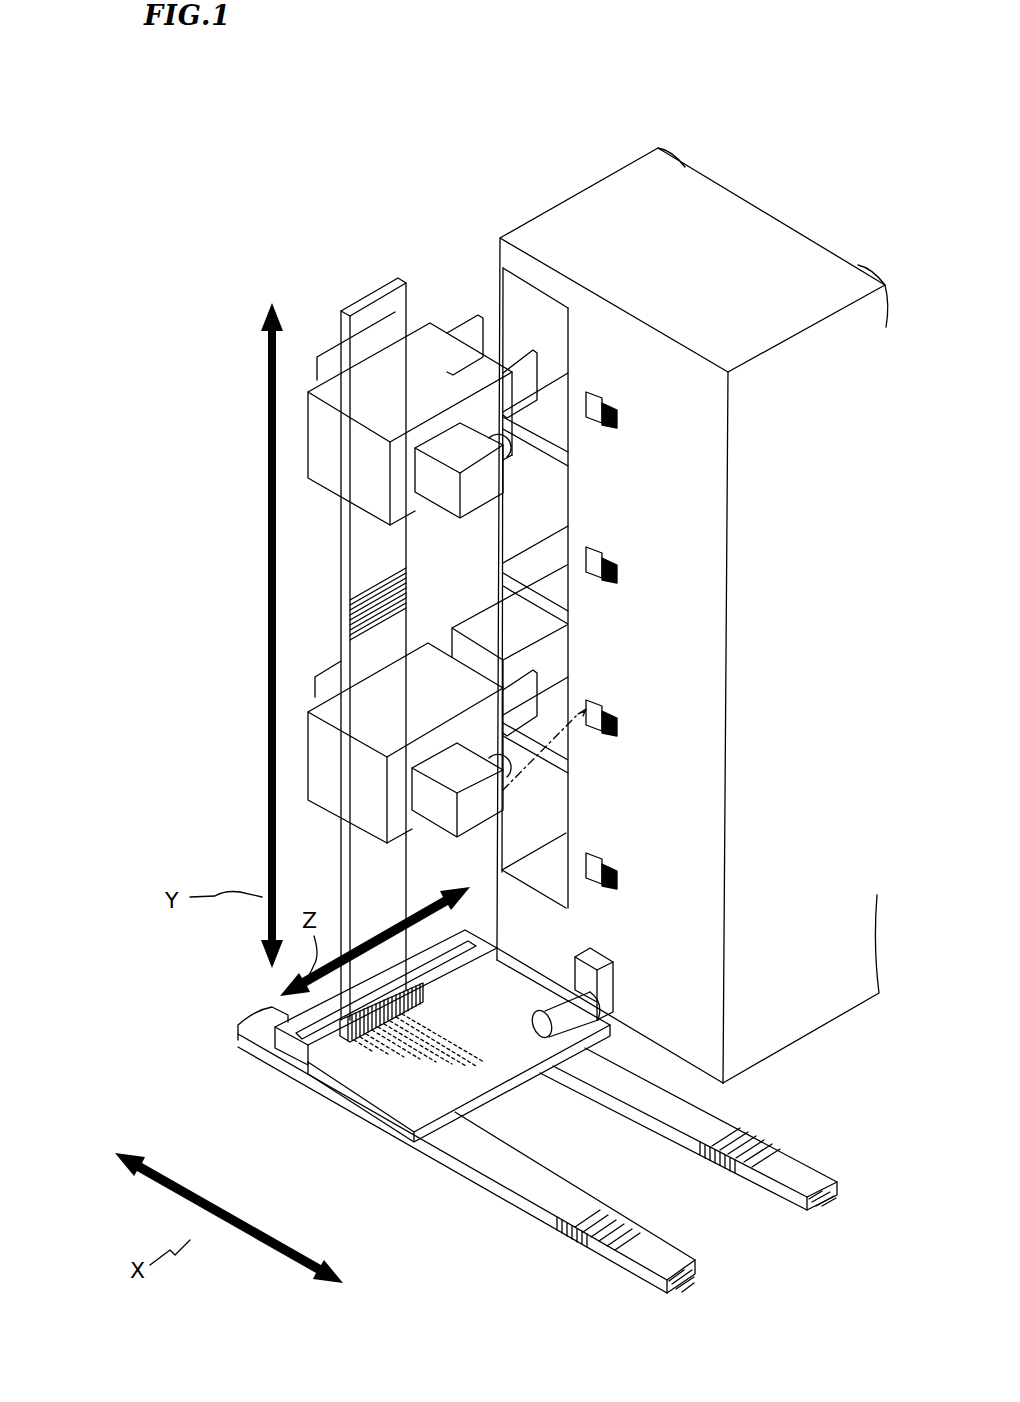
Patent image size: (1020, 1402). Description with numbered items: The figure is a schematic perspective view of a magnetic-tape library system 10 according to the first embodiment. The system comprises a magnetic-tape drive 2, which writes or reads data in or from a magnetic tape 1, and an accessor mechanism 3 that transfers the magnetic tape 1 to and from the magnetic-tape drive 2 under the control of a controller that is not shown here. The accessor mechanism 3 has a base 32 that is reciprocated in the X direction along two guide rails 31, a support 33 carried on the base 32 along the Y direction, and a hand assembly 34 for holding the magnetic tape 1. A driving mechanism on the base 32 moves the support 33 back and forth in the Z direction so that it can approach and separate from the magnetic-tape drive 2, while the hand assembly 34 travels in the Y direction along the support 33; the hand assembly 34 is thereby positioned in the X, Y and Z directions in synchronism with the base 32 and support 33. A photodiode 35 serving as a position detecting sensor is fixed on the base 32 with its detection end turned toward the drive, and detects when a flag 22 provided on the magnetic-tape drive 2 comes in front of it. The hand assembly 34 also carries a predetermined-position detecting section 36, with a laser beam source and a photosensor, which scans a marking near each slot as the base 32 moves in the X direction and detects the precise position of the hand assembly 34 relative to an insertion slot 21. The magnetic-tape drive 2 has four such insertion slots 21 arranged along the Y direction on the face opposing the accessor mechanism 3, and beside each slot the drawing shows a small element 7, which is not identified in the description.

The magnetic tape 1 is at (485, 622).
The magnetic-tape drive 2 is at (795, 270).
The accessor mechanism 3 is at (477, 182).
The sensor (detector) 7 is at (607, 428).
The magnetic-tape library system 10 is at (67, 1290).
The insertion slot 21 is at (532, 311).
The flag 22 is at (600, 1000).
The guide rail 31 is at (810, 1195).
The base 32 is at (367, 1105).
The support 33 is at (368, 290).
The hand assembly 34 is at (330, 754).
The photodiode 35 is at (544, 1030).
The predetermined-position detecting section 36 is at (430, 790).